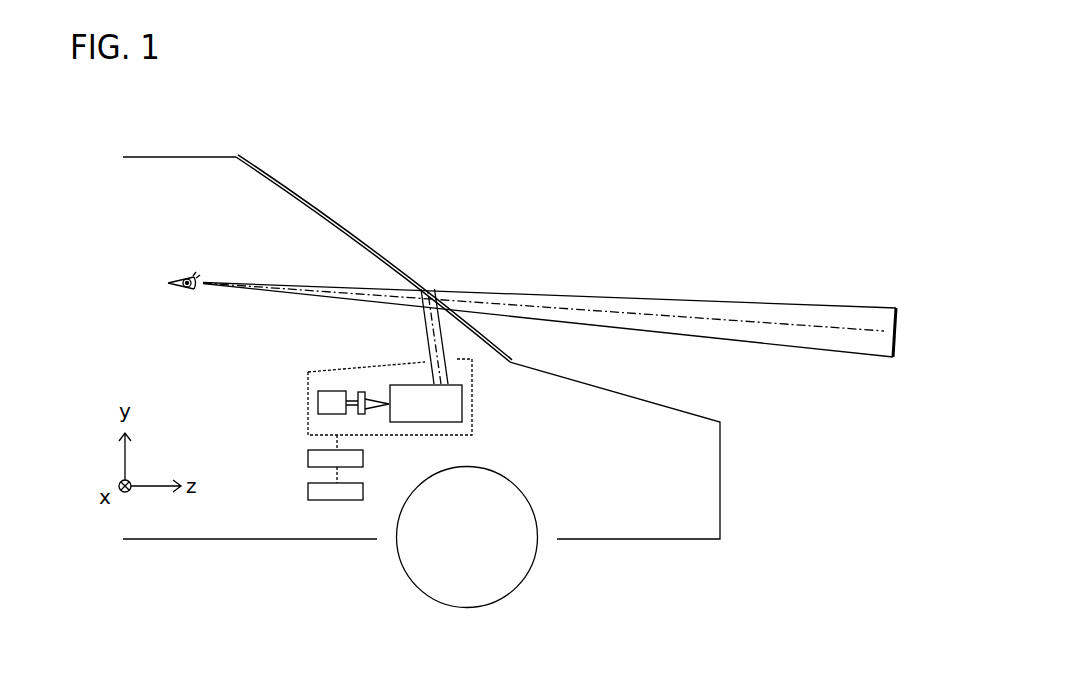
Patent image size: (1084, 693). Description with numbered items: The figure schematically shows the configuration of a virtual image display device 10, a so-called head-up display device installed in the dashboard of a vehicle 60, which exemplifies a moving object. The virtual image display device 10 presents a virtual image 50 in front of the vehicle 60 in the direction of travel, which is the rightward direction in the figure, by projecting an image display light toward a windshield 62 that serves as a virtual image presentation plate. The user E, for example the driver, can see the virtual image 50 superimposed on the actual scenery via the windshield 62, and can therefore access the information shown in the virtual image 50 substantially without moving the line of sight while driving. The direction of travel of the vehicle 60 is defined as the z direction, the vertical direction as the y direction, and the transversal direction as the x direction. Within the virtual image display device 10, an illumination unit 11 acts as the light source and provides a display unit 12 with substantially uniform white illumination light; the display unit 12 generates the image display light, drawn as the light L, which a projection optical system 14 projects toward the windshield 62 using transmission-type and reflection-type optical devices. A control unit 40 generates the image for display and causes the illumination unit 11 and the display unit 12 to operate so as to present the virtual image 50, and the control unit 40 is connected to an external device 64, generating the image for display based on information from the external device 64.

The virtual image display device 10 is at (301, 383).
The illumination unit 11 is at (318, 402).
The display unit 12 is at (361, 391).
The projection optical system 14 is at (462, 405).
The control unit 40 is at (308, 458).
The virtual image 50 is at (896, 294).
The vehicle 60 is at (151, 143).
The windshield 62 is at (327, 219).
The external device 64 is at (308, 492).
The user E is at (185, 275).
The light L is at (420, 331).